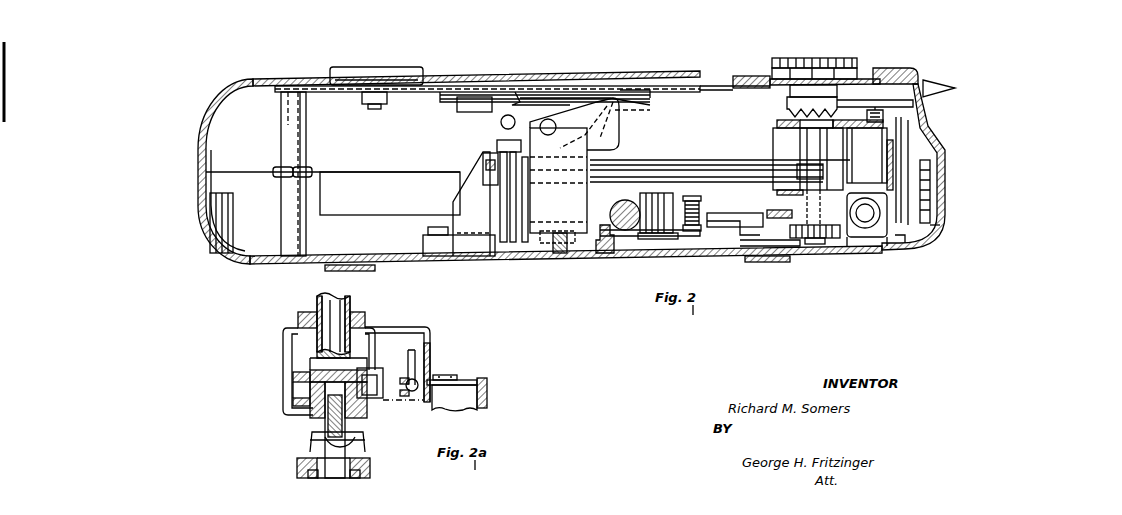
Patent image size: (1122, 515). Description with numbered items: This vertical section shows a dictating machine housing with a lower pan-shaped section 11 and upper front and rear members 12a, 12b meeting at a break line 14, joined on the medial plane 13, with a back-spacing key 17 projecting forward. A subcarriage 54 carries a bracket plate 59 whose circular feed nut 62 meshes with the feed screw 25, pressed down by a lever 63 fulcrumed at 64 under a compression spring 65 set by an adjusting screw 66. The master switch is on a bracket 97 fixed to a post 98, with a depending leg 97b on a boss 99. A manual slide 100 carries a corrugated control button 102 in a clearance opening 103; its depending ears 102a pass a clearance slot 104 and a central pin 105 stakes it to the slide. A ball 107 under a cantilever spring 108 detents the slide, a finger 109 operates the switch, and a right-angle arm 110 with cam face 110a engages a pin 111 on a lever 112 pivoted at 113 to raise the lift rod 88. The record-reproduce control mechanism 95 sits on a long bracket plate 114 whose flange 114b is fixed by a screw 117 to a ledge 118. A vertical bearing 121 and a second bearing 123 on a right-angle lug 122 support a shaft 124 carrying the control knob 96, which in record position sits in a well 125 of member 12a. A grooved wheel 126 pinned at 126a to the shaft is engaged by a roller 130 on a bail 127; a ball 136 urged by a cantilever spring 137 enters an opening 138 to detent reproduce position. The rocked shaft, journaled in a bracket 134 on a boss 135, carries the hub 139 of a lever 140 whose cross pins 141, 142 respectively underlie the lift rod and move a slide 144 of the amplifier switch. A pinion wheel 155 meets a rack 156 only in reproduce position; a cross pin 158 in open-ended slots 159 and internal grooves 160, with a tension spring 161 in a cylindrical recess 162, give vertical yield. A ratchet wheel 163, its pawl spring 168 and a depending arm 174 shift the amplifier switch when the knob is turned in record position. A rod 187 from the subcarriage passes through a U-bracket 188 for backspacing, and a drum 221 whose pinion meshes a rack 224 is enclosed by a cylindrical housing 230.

In FIG. 2A, the frame 11 is at (490, 400).
In FIG. 2, the housing top wall portion 12a is at (712, 73).
In FIG. 2, the housing end wall 12b is at (258, 79).
In FIG. 2, the partition 13 is at (222, 178).
In FIG. 2, the housing wall block 14 is at (733, 82).
In FIG. 2, the pointer 17 is at (928, 81).
In FIG. 2, the shaft 25 is at (617, 209).
In FIG. 2, the bearing member 54 is at (915, 250).
In FIG. 2, the foot 59 is at (735, 258).
In FIG. 2, the plate 62 is at (650, 190).
In FIG. 2, the coil 63 is at (660, 193).
In FIG. 2, the bar 64 is at (715, 216).
In FIG. 2, the spring 65 is at (702, 205).
In FIG. 2, the spring cap 66 is at (692, 196).
In FIG. 2, the pin 88 is at (501, 124).
In FIG. 2, the control assembly 95 is at (885, 57).
In FIG. 2, the knurled knob 96 is at (830, 58).
In FIG. 2, the slide plate 97 is at (445, 92).
In FIG. 2, the slide plate end 97b is at (600, 256).
In FIG. 2, the post 98 is at (282, 124).
In FIG. 2, the bottom strip 99 is at (592, 292).
In FIG. 2, the plate 100 is at (635, 88).
In FIG. 2, the button 102 is at (380, 67).
In FIG. 2, the button stem 102a is at (385, 104).
In FIG. 2, the top plate 103 is at (300, 86).
In FIG. 2, the plate 104 is at (346, 93).
In FIG. 2, the pin 105 is at (372, 109).
In FIG. 2, the lever 107 is at (545, 98).
In FIG. 2, the lever 108 is at (520, 100).
In FIG. 2, the block 109 is at (462, 112).
In FIG. 2, the lever body 110 is at (619, 137).
In FIG. 2, the lever portion 110a is at (558, 168).
In FIG. 2, the pivot 111 is at (556, 127).
In FIG. 2, the block 112 is at (558, 185).
In FIG. 2, the link 113 is at (639, 120).
In FIG. 2, the arm 114 is at (775, 125).
In FIG. 2A, the arm 114 is at (430, 328).
In FIG. 2A, the arm portion 114b is at (450, 380).
In FIG. 2A, the screw 117 is at (452, 376).
In FIG. 2A, the block 118 is at (454, 398).
In FIG. 2, the flange 121 is at (745, 80).
In FIG. 2A, the flange 121 is at (300, 318).
In FIG. 2, the shaft 122 is at (780, 166).
In FIG. 2, the body 123 is at (777, 192).
In FIG. 2A, the body 123 is at (312, 412).
In FIG. 2, the tube 124 is at (800, 150).
In FIG. 2A, the tube 124 is at (352, 306).
In FIG. 2, the housing cap 125 is at (897, 68).
In FIG. 2, the valve body 126 is at (811, 171).
In FIG. 2A, the valve body 126 is at (310, 365).
In FIG. 2A, the valve port 126a is at (293, 385).
In FIG. 2, the rod 127 is at (900, 219).
In FIG. 2A, the rod 127 is at (410, 350).
In FIG. 2A, the block 130 is at (370, 375).
In FIG. 2, the battery 134 is at (455, 193).
In FIG. 2, the support 135 is at (425, 243).
In FIG. 2A, the ball 136 is at (406, 382).
In FIG. 2A, the axis line 137 is at (403, 402).
In FIG. 2A, the sleeve 138 is at (431, 350).
In FIG. 2, the block 139 is at (483, 165).
In FIG. 2, the bar 140 is at (503, 255).
In FIG. 2, the pin 141 is at (497, 143).
In FIG. 2, the bar 142 is at (518, 255).
In FIG. 2, the bracket 144 is at (548, 254).
In FIG. 2, the nut 155 is at (815, 245).
In FIG. 2A, the nut 155 is at (297, 468).
In FIG. 2, the plate 156 is at (785, 250).
In FIG. 2A, the nut 158 is at (352, 479).
In FIG. 2A, the washer 159 is at (310, 479).
In FIG. 2A, the fitting 160 is at (364, 456).
In FIG. 2A, the spring 161 is at (330, 428).
In FIG. 2A, the seat 162 is at (350, 440).
In FIG. 2, the ratchet wheel 163 is at (790, 100).
In FIG. 2, the pawl 168 is at (884, 104).
In FIG. 2, the bracket 174 is at (488, 205).
In FIG. 2, the bracket 187 is at (903, 250).
In FIG. 2, the bearing block 188 is at (865, 247).
In FIG. 2, the spring strip 221 is at (937, 238).
In FIG. 2, the bracket 224 is at (940, 250).
In FIG. 2, the housing end wall 230 is at (930, 142).